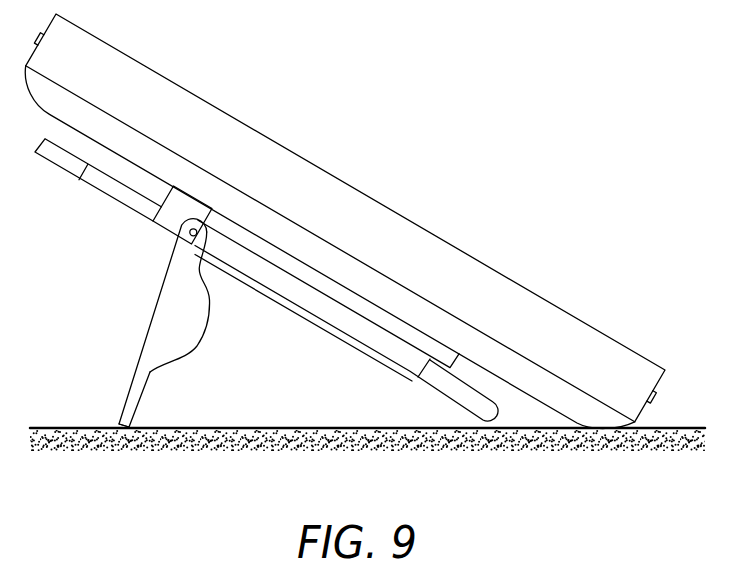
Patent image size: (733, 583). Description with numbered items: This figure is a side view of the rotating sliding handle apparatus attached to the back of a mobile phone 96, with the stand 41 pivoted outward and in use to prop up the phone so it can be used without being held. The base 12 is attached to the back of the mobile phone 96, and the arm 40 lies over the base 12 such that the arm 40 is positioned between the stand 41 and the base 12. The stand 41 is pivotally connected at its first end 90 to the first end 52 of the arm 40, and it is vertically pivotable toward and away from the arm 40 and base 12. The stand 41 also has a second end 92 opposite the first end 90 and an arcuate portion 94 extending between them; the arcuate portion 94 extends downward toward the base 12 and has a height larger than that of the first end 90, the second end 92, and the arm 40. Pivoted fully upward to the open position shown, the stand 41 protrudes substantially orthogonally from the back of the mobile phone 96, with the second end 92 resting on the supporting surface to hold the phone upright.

The base 12 is at (187, 205).
The arm 40 is at (372, 335).
The stand 41 is at (165, 380).
The first end of the arm 52 is at (165, 223).
The first end of the stand 90 is at (200, 229).
The second end of the stand 92 is at (125, 430).
The arcuate portion 94 is at (207, 338).
The mobile phone 96 is at (373, 200).